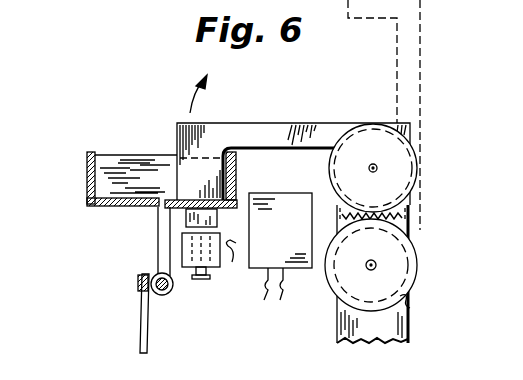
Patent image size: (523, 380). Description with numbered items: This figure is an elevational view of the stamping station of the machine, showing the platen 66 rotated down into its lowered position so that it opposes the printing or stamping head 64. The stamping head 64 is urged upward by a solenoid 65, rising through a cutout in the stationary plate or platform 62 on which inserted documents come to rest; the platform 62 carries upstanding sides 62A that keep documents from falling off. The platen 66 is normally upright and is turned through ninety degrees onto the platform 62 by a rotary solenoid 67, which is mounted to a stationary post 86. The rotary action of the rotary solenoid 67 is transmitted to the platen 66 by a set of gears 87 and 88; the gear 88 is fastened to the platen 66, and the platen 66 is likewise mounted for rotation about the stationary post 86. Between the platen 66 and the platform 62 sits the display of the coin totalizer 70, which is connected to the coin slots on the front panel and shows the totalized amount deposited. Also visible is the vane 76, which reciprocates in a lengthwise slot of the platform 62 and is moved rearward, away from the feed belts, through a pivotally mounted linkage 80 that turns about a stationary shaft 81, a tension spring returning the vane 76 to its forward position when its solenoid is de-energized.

The stationary plate 62 is at (112, 206).
The upstanding sides 62A is at (88, 172).
The vane 76 is at (152, 164).
The platen 66 is at (243, 122).
The gear 88 is at (414, 158).
The gear 87 is at (413, 243).
The rotary solenoid 67 is at (394, 263).
The stationary post 86 is at (410, 328).
The coin totalizer 70 is at (287, 236).
The stamping head 64 is at (212, 220).
The solenoid 65 is at (210, 260).
The stationary shaft 81 is at (171, 292).
The linkage 80 is at (142, 312).